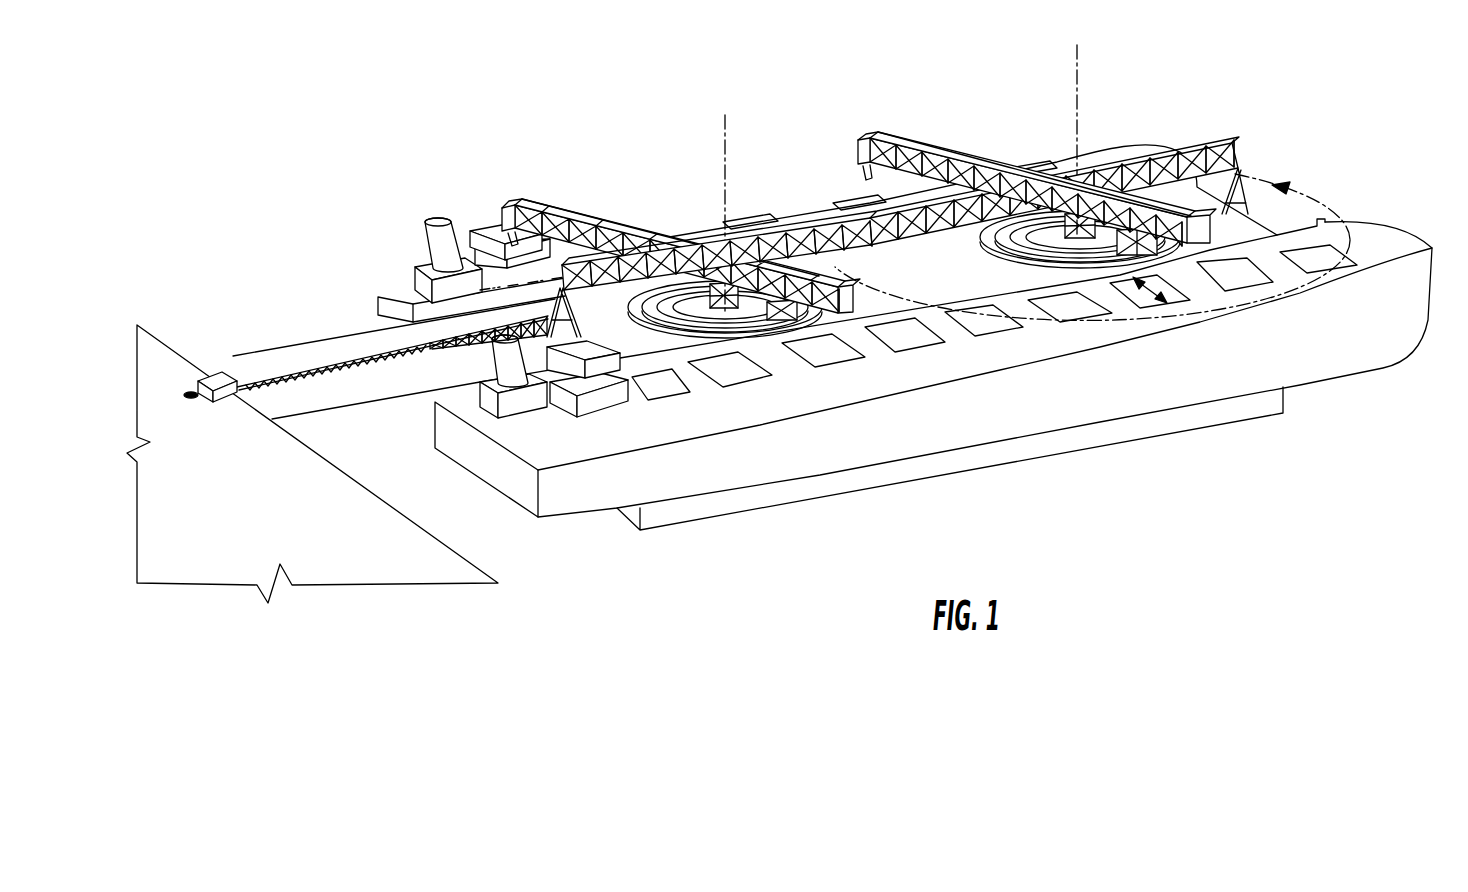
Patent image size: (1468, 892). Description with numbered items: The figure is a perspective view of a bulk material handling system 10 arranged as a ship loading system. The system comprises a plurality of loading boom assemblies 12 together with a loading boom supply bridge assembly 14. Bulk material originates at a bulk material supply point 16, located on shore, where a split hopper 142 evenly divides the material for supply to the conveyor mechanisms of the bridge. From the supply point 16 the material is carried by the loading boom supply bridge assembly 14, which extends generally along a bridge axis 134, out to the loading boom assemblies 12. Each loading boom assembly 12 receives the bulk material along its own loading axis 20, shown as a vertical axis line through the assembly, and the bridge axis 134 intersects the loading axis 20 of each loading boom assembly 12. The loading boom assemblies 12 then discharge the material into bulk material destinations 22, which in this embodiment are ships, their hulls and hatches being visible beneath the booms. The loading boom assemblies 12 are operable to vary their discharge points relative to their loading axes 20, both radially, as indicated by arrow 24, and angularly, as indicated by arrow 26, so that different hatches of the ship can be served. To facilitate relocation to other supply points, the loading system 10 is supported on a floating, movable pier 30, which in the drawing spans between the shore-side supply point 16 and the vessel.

The bulk material handling system 10 is at (875, 95).
The loading boom assemblies 12 is at (980, 262).
The loading boom supply bridge assembly 14 is at (1203, 95).
The bulk material supply point 16 is at (264, 522).
The loading axes 20 is at (720, 162).
The bulk material destinations 22 is at (500, 236).
The arrow 24 is at (1206, 278).
The arrow 26 is at (1322, 203).
The floating, movable pier 30 is at (360, 350).
The bridge axis 134 is at (1258, 163).
The split hopper 142 is at (222, 382).